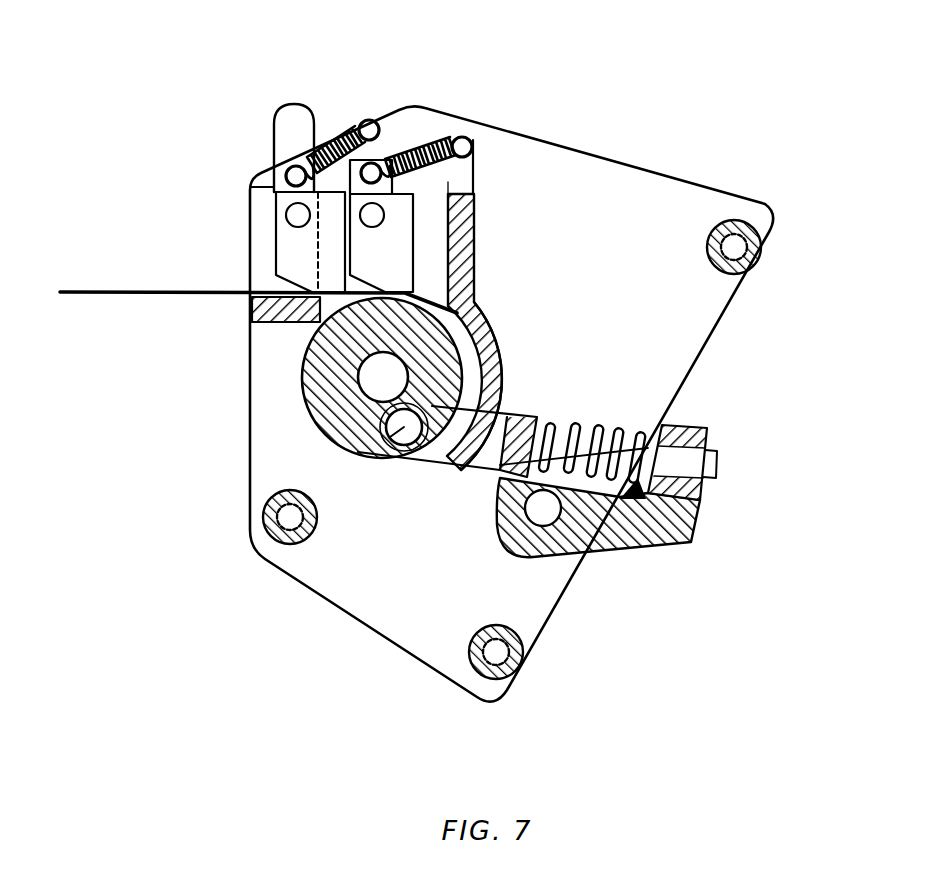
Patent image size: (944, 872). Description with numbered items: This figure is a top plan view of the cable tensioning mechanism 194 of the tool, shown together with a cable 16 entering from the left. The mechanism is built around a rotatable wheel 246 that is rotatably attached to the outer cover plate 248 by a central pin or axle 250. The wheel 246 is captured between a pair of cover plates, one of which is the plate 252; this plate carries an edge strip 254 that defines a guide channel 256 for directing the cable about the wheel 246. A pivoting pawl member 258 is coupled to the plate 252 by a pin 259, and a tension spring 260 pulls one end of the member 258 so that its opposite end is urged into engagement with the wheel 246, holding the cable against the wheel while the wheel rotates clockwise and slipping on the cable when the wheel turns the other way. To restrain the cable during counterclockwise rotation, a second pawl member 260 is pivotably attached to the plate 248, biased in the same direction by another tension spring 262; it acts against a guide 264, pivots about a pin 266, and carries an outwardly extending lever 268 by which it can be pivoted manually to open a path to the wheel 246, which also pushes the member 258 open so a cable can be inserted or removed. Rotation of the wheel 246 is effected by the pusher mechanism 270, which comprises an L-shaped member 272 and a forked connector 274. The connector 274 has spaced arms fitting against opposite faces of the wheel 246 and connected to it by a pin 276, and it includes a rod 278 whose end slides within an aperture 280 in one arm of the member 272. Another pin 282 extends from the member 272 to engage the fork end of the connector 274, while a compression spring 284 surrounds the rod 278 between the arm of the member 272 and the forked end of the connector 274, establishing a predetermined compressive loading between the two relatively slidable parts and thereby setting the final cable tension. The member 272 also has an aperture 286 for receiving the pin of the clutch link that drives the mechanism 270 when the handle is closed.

The web sheet 16 is at (95, 292).
The cable tensioning mechanism 194 is at (171, 251).
The rotatable wheel 246 is at (312, 405).
The outer cover plate 248 is at (640, 202).
The central pin or axle 250 is at (383, 377).
The cover plate 252 is at (447, 181).
The edge strip 254 is at (463, 290).
The guide channel 256 is at (470, 372).
The pivoting pawl member 258 is at (400, 257).
The pin 259 is at (476, 203).
The tension spring / second pawl member 260 is at (298, 215).
The tension spring 262 is at (345, 132).
The guide 264 is at (285, 302).
The pin 266 is at (297, 243).
The outwardly extending lever 268 is at (293, 118).
The pusher mechanism 270 is at (730, 520).
The L-shaped member 272 is at (660, 545).
The forked connector 274 is at (493, 452).
The pin 276 is at (360, 450).
The rod 278 is at (683, 465).
The aperture 280 is at (713, 460).
The pin 282 is at (505, 478).
The compression spring 284 is at (620, 425).
The aperture 286 is at (543, 510).